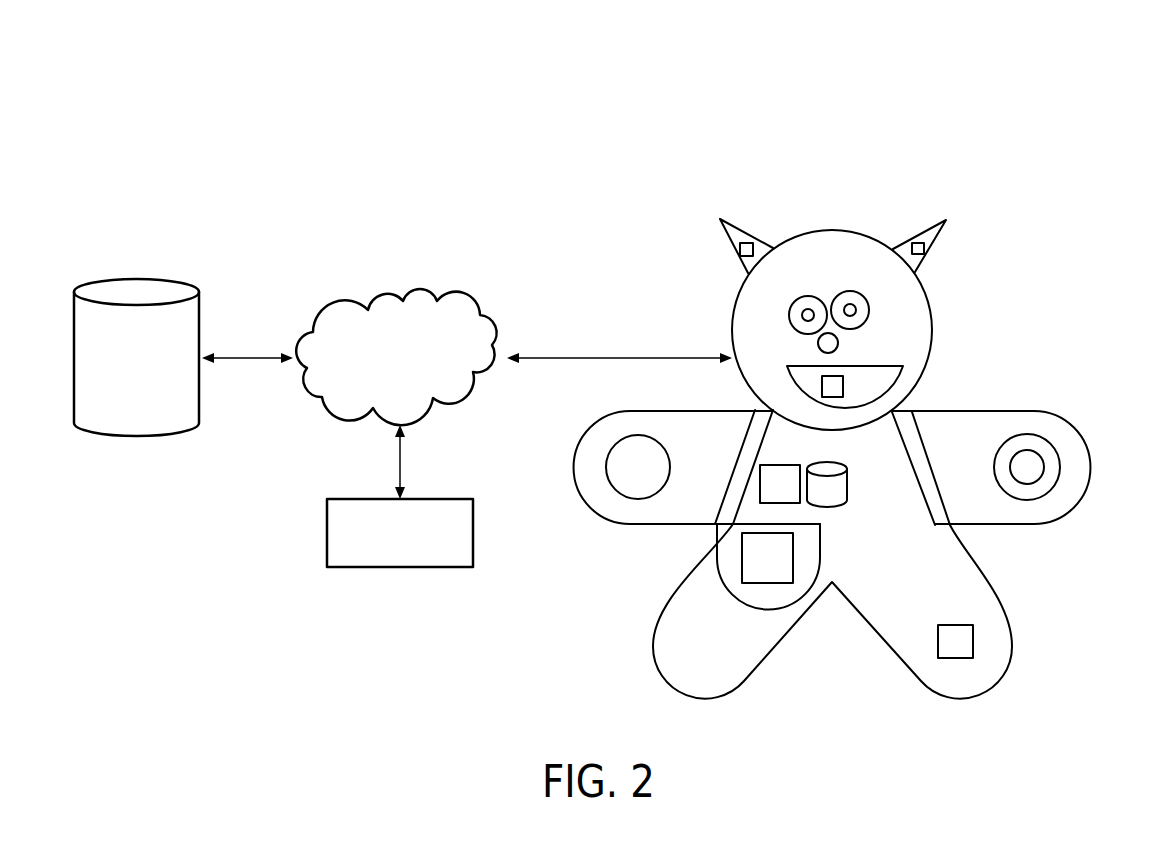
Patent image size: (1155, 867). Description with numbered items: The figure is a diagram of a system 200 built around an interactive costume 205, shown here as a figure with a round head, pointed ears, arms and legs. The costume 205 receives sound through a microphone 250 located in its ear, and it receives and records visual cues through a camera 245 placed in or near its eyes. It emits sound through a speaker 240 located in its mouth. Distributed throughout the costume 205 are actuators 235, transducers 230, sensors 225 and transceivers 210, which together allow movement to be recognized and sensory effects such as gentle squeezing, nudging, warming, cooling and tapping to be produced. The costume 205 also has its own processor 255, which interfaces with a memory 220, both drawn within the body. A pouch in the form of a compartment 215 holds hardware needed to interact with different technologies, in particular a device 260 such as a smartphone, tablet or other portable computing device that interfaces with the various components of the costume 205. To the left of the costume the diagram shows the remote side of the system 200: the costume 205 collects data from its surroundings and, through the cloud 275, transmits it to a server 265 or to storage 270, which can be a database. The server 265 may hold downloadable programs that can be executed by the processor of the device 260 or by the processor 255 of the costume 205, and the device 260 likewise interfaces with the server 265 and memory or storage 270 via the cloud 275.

The system 200 is at (112, 107).
The interactive costume 205 is at (715, 698).
The transceivers 210 is at (973, 638).
The compartment 215 is at (797, 603).
The memory 220 is at (845, 503).
The sensors 225 is at (1050, 442).
The transducers 230 is at (1027, 484).
The actuators 235 is at (921, 440).
The speaker 240 is at (843, 384).
The camera 245 is at (857, 305).
The microphone 250 is at (916, 242).
The processor 255 is at (760, 478).
The device 260 is at (742, 560).
The server 265 is at (397, 567).
The storage 270 is at (137, 278).
The cloud 275 is at (418, 288).